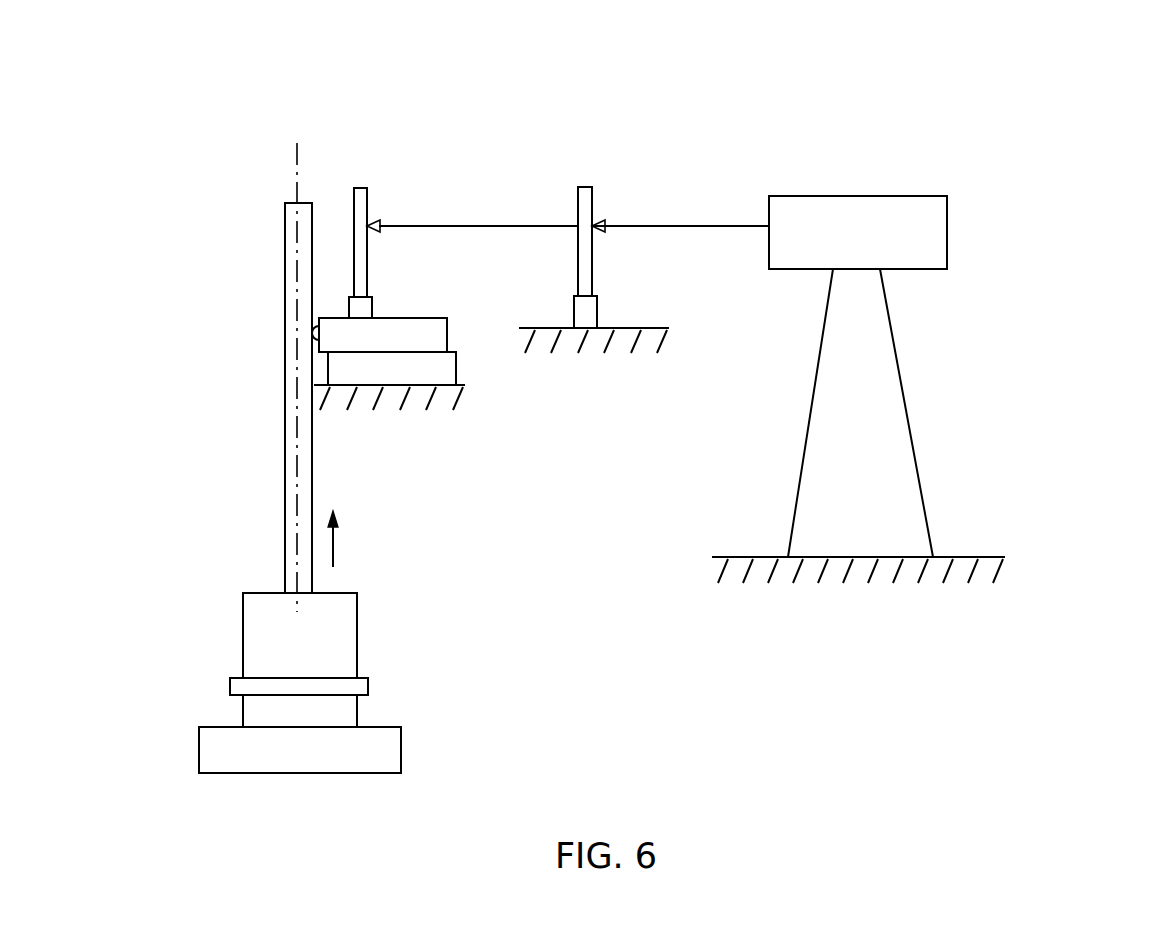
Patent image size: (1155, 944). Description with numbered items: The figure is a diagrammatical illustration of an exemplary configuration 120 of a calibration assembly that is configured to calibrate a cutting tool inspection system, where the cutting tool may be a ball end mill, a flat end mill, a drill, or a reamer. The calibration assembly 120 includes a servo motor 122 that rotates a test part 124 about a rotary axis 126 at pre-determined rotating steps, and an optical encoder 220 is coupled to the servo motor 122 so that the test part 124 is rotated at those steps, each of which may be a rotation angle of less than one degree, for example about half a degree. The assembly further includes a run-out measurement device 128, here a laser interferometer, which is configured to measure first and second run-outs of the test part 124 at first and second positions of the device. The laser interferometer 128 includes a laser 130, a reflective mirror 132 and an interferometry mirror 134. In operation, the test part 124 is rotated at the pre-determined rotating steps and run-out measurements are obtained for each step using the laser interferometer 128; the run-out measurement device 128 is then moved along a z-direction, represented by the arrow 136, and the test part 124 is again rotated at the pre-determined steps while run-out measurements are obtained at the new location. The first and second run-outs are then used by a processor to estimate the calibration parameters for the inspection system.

The calibration assembly configuration 120 is at (1036, 87).
The servo motor 122 is at (402, 748).
The test part 124 is at (312, 480).
The rotary axis 126 is at (296, 160).
The run-out measurement device 128 is at (656, 111).
The laser 130 is at (948, 232).
The reflective mirror 132 is at (368, 200).
The interferometry mirror 134 is at (593, 200).
The z-direction 136 is at (336, 540).
The optical encoder 220 is at (358, 707).